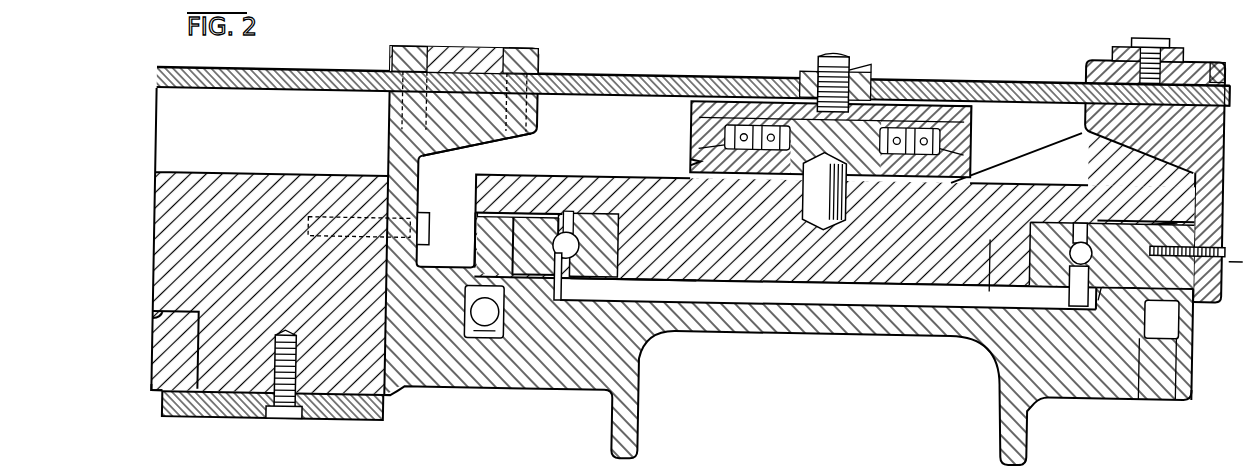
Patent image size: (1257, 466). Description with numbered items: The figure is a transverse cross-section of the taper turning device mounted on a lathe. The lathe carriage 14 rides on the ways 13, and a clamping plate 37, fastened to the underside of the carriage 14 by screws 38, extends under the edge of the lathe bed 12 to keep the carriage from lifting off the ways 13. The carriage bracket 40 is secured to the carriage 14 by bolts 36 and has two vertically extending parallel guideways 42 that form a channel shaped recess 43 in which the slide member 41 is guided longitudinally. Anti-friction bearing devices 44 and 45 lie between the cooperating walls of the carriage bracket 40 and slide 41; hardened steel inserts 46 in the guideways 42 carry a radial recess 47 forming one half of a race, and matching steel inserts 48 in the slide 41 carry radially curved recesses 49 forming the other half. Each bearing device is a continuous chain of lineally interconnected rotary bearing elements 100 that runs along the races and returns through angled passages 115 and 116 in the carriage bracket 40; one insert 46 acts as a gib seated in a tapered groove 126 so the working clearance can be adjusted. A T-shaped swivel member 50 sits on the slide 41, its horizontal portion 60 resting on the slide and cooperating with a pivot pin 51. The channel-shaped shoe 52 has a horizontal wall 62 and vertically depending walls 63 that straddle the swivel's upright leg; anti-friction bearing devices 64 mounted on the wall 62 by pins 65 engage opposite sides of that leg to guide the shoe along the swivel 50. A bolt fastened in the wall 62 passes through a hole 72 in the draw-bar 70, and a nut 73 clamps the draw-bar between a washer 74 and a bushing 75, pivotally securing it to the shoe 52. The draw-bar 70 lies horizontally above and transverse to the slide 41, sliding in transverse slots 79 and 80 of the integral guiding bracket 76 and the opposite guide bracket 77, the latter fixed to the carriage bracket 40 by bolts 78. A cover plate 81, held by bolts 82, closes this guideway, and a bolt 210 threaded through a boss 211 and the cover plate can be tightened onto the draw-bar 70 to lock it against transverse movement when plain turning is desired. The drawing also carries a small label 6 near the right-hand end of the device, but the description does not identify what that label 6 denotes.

The bore 6 is at (1246, 243).
The lathe bed 12 is at (158, 393).
The ways 13 is at (154, 318).
The carriage 14 is at (278, 178).
The bolts 36 is at (428, 210).
The clamping plate 37 is at (228, 411).
The screws 38 is at (292, 416).
The carriage bracket 40 is at (566, 381).
The slide member 41 is at (607, 177).
The guideways 42 is at (473, 233).
The channel shaped recess 43 is at (804, 289).
The anti-friction bearing device 44 is at (573, 218).
The anti-friction bearing device 45 is at (1081, 212).
The hardened steel insert 46 is at (508, 219).
The radial recess 47 is at (559, 243).
The steel inserts 48 is at (604, 272).
The radially curved recesses 49 is at (569, 233).
The swivel member 50 is at (702, 152).
The pin 51 is at (832, 203).
The shoe 52 is at (963, 86).
The horizontal portion 60 is at (977, 166).
The horizontal wall 62 is at (761, 97).
The vertically depending walls 63 is at (701, 109).
The anti-friction bearing devices 64 is at (736, 120).
The pins 65 is at (701, 139).
The draw-bar 70 is at (380, 74).
The hole 72 is at (810, 57).
The nut 73 is at (850, 58).
The washer 74 is at (865, 66).
The bushing 75 is at (875, 69).
The guiding bracket 76 is at (521, 134).
The guide bracket 77 is at (1216, 132).
The bolts 78 is at (1223, 239).
The transverse slot 79 is at (441, 95).
The transverse slot 80 is at (1223, 91).
The cover plate 81 is at (465, 55).
The bolts 82 is at (415, 45).
The rotary bearing elements 100 is at (1093, 214).
The passage 115 is at (478, 324).
The passage 116 is at (1144, 383).
The groove 126 is at (1102, 284).
The bolt 210 is at (1167, 22).
The boss 211 is at (1112, 33).